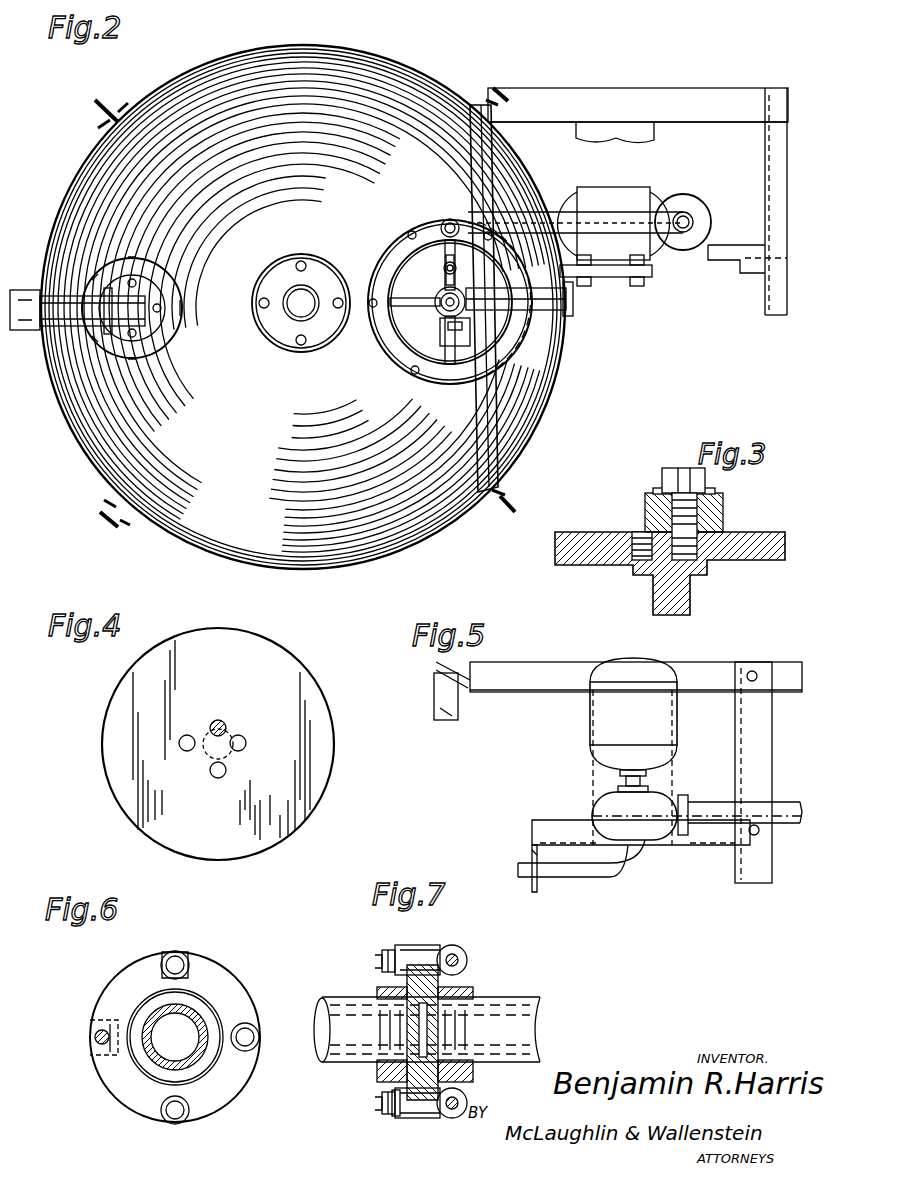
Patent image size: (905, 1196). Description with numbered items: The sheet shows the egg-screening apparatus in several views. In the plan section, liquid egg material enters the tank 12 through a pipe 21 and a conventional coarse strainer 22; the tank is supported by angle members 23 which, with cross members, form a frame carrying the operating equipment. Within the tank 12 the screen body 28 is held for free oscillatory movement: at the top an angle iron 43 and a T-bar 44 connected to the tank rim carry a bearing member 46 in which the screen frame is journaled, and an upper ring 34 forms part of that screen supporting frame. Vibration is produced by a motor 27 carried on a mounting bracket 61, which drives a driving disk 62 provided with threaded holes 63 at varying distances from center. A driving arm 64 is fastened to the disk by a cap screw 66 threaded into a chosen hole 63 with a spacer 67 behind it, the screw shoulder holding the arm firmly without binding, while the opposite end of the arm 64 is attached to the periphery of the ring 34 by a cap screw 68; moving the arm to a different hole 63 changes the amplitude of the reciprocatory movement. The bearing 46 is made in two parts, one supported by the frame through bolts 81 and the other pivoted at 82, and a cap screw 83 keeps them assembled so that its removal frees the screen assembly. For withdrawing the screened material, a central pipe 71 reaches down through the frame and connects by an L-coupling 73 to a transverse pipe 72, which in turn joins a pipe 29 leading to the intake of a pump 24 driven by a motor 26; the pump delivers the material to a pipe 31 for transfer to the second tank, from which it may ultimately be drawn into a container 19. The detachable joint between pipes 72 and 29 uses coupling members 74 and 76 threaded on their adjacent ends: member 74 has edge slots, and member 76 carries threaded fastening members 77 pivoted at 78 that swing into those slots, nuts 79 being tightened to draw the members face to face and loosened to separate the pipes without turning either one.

In FIG. 2, the tank 12 is at (236, 58).
In FIG. 2, the pipe 21 is at (58, 300).
In FIG. 2, the coarse strainer 22 is at (155, 350).
In FIG. 2, the angle members 23 is at (97, 112).
In FIG. 5, the angle members 23 is at (478, 692).
In FIG. 5, the pump 24 is at (657, 840).
In FIG. 5, the motor 26 is at (600, 737).
In FIG. 2, the motor 27 is at (616, 195).
In FIG. 2, the screen body 28 is at (398, 382).
In FIG. 5, the pipe 29 is at (528, 866).
In FIG. 7, the pipe 29 is at (518, 1030).
In FIG. 5, the pipe 31 is at (712, 806).
In FIG. 2, the upper ring 34 is at (320, 343).
In FIG. 2, the angle iron 43 is at (490, 425).
In FIG. 5, the angle iron 43 is at (440, 722).
In FIG. 2, the T-bar 44 is at (548, 310).
In FIG. 2, the bearing member 46 is at (460, 262).
In FIG. 2, the mounting bracket 61 is at (622, 277).
In FIG. 2, the driving disk 62 is at (692, 212).
In FIG. 3, the driving disk 62 is at (600, 565).
In FIG. 4, the driving disk 62 is at (112, 718).
In FIG. 3, the threaded holes 63 is at (635, 532).
In FIG. 4, the threaded holes 63 is at (228, 770).
In FIG. 2, the driving arm 64 is at (525, 215).
In FIG. 3, the driving arm 64 is at (722, 502).
In FIG. 2, the cap screw 66 is at (693, 222).
In FIG. 3, the cap screw 66 is at (668, 472).
In FIG. 4, the cap screw 66 is at (218, 720).
In FIG. 3, the spacer 67 is at (648, 510).
In FIG. 2, the cap screw 68 is at (446, 222).
In FIG. 2, the pipe 71 is at (443, 311).
In FIG. 6, the transverse pipe 72 is at (158, 1062).
In FIG. 7, the transverse pipe 72 is at (375, 1065).
In FIG. 7, the L-coupling 73 is at (450, 1118).
In FIG. 6, the coupling member 74 is at (128, 982).
In FIG. 7, the coupling member 74 is at (382, 990).
In FIG. 7, the coupling member 76 is at (465, 992).
In FIG. 6, the threaded fastening members 77 is at (250, 1024).
In FIG. 7, the threaded fastening members 77 is at (430, 955).
In FIG. 7, the pivot 78 is at (462, 960).
In FIG. 6, the nuts 79 is at (190, 966).
In FIG. 7, the nuts 79 is at (398, 948).
In FIG. 7, the container 19 is at (398, 1112).
In FIG. 2, the bolts 81 is at (500, 336).
In FIG. 2, the pivot 82 is at (443, 268).
In FIG. 2, the cap screw 83 is at (445, 348).